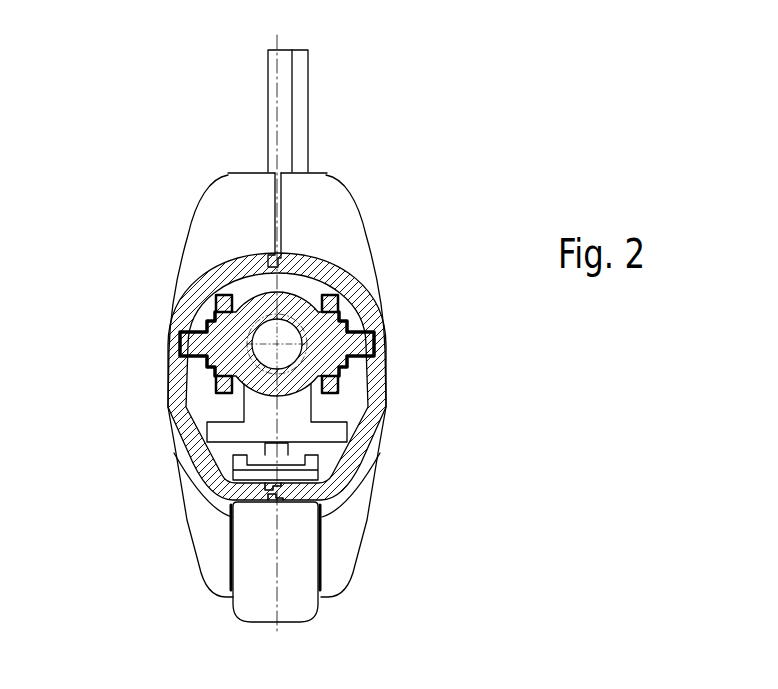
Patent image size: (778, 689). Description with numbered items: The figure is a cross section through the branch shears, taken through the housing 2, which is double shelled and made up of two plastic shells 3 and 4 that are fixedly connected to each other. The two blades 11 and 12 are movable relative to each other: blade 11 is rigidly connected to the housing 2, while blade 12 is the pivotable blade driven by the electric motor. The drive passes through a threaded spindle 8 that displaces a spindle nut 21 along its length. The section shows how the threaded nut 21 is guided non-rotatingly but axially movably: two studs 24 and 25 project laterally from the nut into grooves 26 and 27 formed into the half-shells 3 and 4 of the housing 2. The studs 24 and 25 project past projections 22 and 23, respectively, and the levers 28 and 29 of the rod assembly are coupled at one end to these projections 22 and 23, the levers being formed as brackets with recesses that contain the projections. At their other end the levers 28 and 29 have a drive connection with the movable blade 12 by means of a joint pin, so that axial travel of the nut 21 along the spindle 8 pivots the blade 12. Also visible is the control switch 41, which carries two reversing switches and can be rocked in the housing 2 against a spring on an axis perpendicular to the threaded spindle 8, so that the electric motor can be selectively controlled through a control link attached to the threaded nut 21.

The housing 2 is at (175, 492).
The plastic shell 3 is at (212, 555).
The plastic shell 4 is at (343, 462).
The threaded spindle 8 is at (268, 338).
The blade 11 is at (266, 84).
The blade 12 is at (310, 84).
The spindle nut 21 is at (290, 290).
The projection 22 is at (217, 371).
The projection 23 is at (343, 366).
The stud 24 is at (179, 333).
The stud 25 is at (374, 330).
The groove 26 is at (174, 345).
The groove 27 is at (385, 345).
The lever 28 is at (207, 421).
The lever 29 is at (383, 422).
The control switch 41 is at (296, 587).